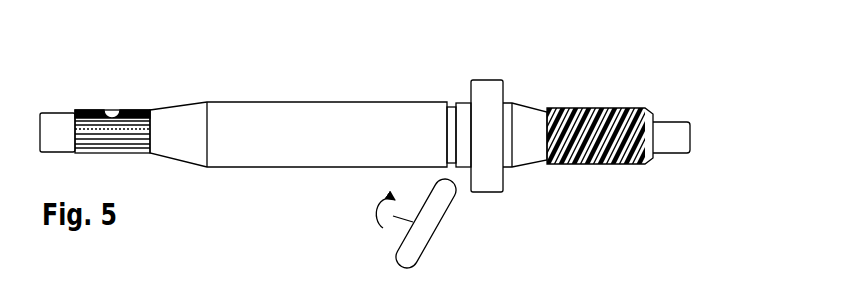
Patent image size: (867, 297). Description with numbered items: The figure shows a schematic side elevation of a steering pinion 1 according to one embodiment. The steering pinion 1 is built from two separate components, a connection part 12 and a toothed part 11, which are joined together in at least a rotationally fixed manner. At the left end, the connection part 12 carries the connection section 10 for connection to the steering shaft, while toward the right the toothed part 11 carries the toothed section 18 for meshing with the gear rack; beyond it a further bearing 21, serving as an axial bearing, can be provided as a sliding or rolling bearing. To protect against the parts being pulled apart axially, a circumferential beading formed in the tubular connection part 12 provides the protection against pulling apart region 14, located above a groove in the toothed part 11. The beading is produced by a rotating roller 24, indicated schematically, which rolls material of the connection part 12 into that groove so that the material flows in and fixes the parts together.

The steering pinion 1 is at (307, 80).
The connection section 10 is at (80, 108).
The toothed part 11 is at (588, 90).
The connection part 12 is at (252, 172).
The protection against pulling apart region 14 is at (453, 106).
The toothed section 18 is at (628, 127).
The bearing 21 is at (672, 132).
The roller 24 is at (442, 203).